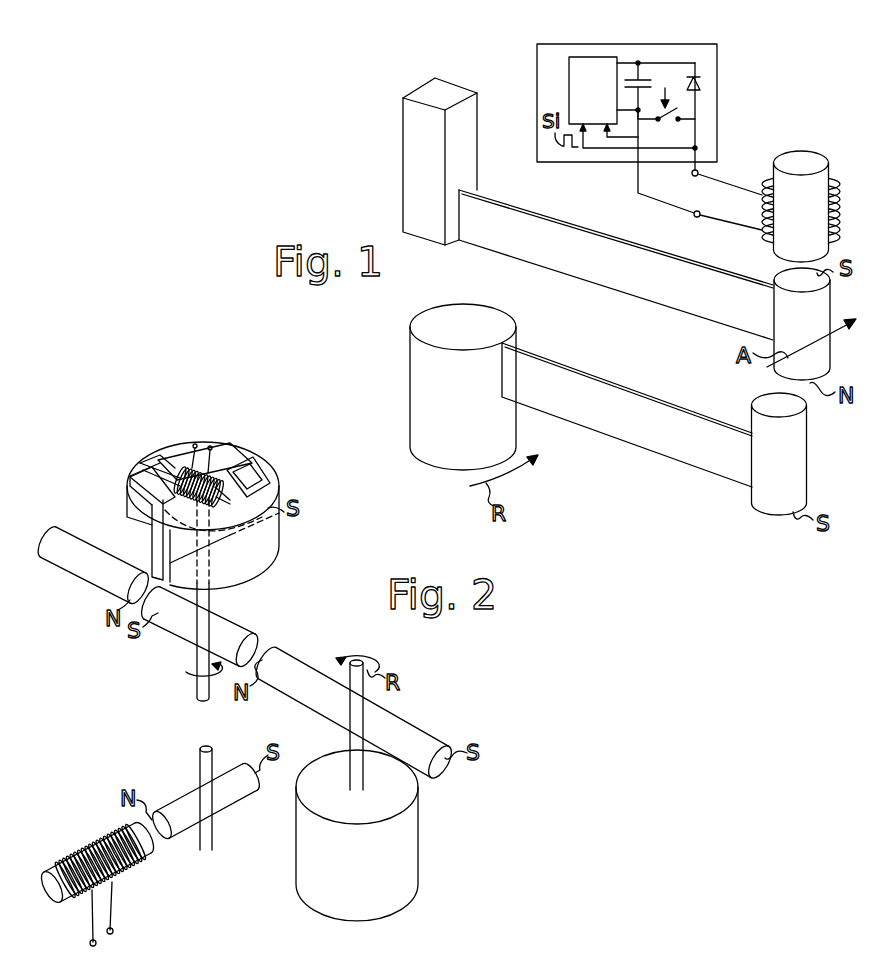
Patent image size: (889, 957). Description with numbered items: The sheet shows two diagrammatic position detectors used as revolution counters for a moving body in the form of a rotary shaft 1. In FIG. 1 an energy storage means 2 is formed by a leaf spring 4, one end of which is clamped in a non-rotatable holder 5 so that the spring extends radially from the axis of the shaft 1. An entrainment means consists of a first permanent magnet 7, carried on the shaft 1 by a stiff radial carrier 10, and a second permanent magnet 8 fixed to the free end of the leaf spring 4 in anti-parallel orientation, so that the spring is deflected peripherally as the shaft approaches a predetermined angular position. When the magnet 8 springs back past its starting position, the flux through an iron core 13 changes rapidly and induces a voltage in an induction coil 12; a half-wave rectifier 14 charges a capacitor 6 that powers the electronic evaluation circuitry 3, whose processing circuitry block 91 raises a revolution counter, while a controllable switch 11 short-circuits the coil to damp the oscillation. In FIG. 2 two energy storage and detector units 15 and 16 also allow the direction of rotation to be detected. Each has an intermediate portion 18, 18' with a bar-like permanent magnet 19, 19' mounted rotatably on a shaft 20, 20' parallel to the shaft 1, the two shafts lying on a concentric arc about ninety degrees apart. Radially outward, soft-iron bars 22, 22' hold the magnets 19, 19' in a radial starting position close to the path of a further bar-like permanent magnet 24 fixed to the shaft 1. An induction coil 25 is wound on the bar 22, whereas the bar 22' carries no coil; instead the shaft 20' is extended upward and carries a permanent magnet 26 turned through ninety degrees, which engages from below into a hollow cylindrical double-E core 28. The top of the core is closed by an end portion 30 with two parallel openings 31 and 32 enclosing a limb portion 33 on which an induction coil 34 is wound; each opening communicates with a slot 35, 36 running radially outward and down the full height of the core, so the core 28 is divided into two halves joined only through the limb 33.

In FIG. 1, the rotary shaft 1 is at (424, 374).
In FIG. 2, the rotary shaft 1 is at (402, 868).
In FIG. 1, the energy storage means 2 is at (536, 200).
In FIG. 1, the electronic evaluation circuitry 3 is at (712, 56).
In FIG. 1, the leaf spring 4 is at (644, 277).
In FIG. 1, the holder 5 is at (414, 140).
In FIG. 1, the capacitor 6 is at (653, 76).
In FIG. 1, the first permanent magnet 7 is at (793, 453).
In FIG. 1, the second permanent magnet 8 is at (815, 308).
In FIG. 1, the stiff carrier 10 is at (648, 430).
In FIG. 1, the controllable switch 11 is at (670, 123).
In FIG. 1, the induction coil 12 is at (840, 208).
In FIG. 1, the iron core 13 is at (808, 160).
In FIG. 1, the half-wave rectifier 14 is at (703, 88).
In FIG. 2, the first energy storage and detector unit 15 is at (170, 858).
In FIG. 2, the second energy storage and detector unit 16 is at (103, 607).
In FIG. 2, the intermediate portion 18 is at (135, 763).
In FIG. 2, the intermediate portion 18' is at (292, 601).
In FIG. 2, the permanent magnet 19 is at (211, 802).
In FIG. 2, the permanent magnet 19' is at (194, 630).
In FIG. 2, the mounting shaft 20 is at (186, 785).
In FIG. 2, the mounting shaft 20' is at (171, 601).
In FIG. 2, the soft-iron bar 22 is at (84, 884).
In FIG. 2, the soft-iron bar 22' is at (83, 567).
In FIG. 2, the bar-like permanent magnet 24 is at (417, 743).
In FIG. 2, the induction coil 25 is at (93, 837).
In FIG. 2, the permanent magnet 26 is at (280, 553).
In FIG. 2, the double-E core 28 is at (133, 512).
In FIG. 2, the end portion 30 is at (145, 460).
In FIG. 2, the opening 31 is at (147, 475).
In FIG. 2, the opening 32 is at (180, 462).
In FIG. 2, the limb portion 33 is at (240, 482).
In FIG. 2, the induction coil 34 is at (182, 470).
In FIG. 2, the slot 35 is at (126, 560).
In FIG. 2, the slot 36 is at (243, 452).
In FIG. 1, the control unit 91 is at (588, 83).